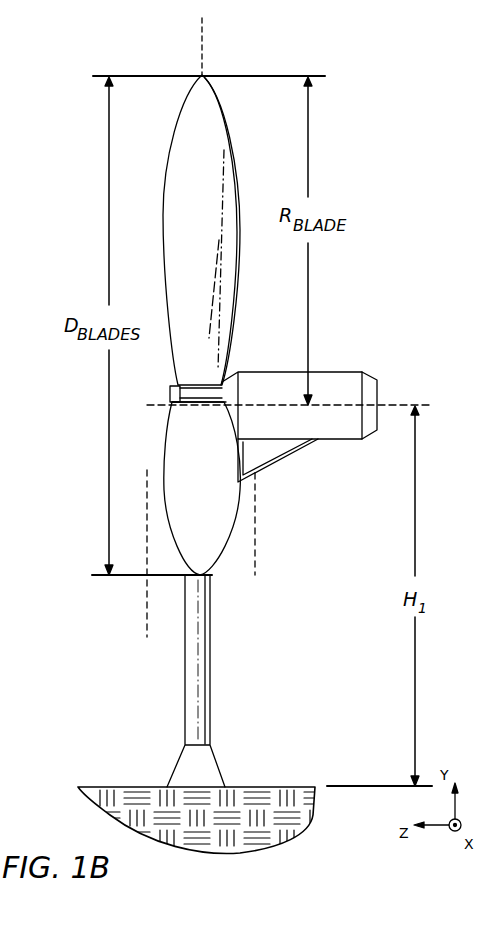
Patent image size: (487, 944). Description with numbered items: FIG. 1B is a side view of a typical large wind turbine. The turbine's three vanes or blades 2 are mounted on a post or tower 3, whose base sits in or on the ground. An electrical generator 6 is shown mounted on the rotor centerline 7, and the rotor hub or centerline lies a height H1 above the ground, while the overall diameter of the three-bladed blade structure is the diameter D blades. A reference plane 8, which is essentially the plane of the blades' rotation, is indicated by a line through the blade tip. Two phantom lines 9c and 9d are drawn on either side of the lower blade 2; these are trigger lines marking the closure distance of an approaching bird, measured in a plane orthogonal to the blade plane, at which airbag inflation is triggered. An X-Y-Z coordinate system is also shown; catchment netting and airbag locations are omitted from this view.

The reference plane 8 is at (203, 47).
The blade 2 is at (232, 130).
The electrical generator 6 is at (340, 370).
The rotor centerline 7 is at (392, 404).
The phantom trigger line 9c is at (146, 512).
The phantom trigger line 9d is at (256, 520).
The tower 3 is at (211, 660).